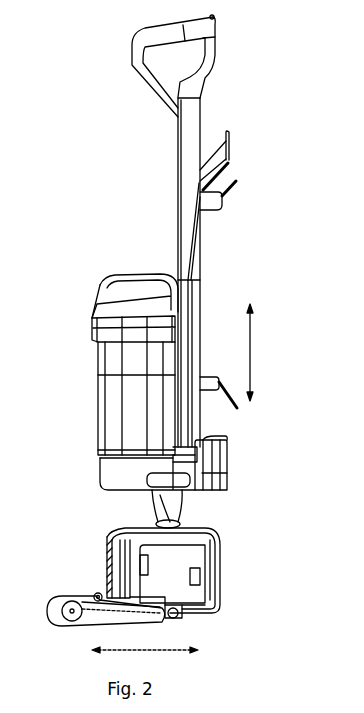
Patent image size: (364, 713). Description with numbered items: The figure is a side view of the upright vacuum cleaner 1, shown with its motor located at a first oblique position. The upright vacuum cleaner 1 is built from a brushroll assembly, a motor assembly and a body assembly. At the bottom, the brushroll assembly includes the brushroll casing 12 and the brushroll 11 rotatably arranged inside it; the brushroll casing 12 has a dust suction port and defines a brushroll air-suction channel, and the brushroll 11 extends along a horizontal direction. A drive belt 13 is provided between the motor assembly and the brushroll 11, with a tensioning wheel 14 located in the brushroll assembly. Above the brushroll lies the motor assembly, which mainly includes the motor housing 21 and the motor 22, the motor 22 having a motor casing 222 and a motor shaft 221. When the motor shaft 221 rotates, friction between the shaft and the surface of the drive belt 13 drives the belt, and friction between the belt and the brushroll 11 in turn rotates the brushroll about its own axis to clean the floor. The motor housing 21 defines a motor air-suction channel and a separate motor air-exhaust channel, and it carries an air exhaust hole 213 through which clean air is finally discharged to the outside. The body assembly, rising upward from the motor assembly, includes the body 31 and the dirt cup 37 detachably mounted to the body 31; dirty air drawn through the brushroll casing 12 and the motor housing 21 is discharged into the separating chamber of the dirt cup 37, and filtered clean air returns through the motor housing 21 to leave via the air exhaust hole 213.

The upright vacuum cleaner 1 is at (252, 95).
The body 31 is at (195, 268).
The dirt cup 37 is at (103, 364).
The motor housing 21 is at (200, 530).
The motor 22 is at (193, 562).
The air exhaust hole 213 is at (115, 538).
The motor casing 222 is at (202, 585).
The motor shaft 221 is at (183, 615).
The brushroll casing 12 is at (63, 600).
The drive belt 13 is at (140, 617).
The brushroll 11 is at (68, 616).
The tensioning wheel 14 is at (97, 594).